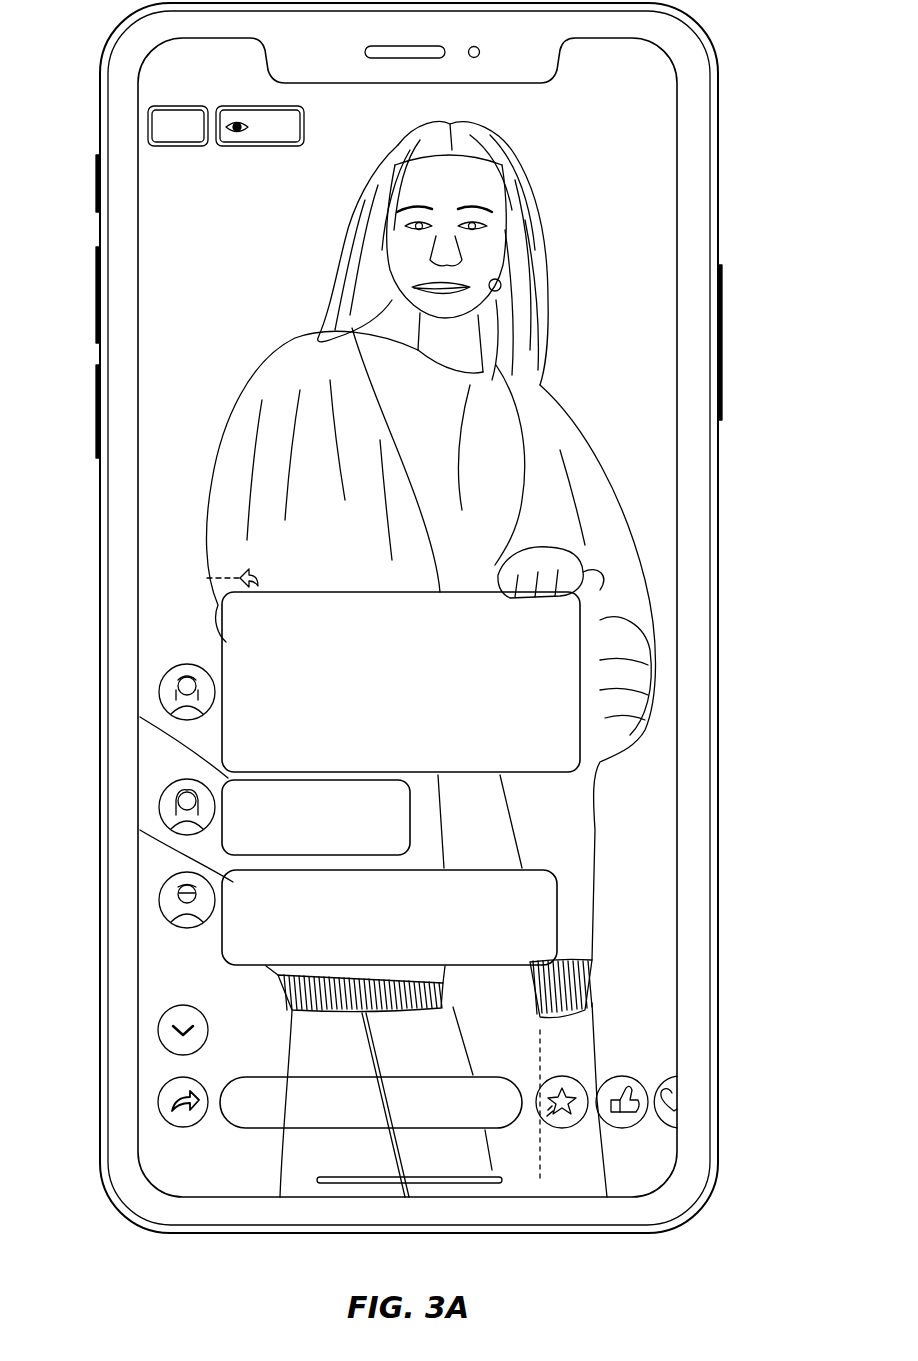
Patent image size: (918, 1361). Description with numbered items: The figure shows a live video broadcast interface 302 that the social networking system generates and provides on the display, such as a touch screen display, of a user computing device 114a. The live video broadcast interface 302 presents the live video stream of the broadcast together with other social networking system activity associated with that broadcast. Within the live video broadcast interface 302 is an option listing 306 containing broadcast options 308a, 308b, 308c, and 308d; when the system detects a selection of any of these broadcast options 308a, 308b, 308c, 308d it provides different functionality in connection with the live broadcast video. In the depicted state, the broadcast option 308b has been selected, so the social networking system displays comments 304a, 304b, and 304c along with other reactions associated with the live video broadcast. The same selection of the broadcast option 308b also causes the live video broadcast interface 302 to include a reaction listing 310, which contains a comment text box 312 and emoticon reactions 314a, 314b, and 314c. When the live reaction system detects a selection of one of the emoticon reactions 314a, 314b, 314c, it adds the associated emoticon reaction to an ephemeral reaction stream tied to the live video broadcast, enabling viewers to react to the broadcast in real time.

The user computing device 114a is at (693, 33).
The live video broadcast interface 302 is at (658, 141).
The comment 304a is at (568, 636).
The comment 304b is at (232, 783).
The comment 304c is at (233, 893).
The option listing 306 is at (339, 1038).
The broadcast option 308a is at (275, 1045).
The broadcast option 308b is at (394, 1046).
The broadcast option 308c is at (500, 1045).
The broadcast option 308d is at (610, 1047).
The reaction listing 310 is at (410, 1156).
The comment text box 312 is at (265, 1128).
The emoticon reaction 314a is at (555, 1128).
The emoticon reaction 314b is at (620, 1128).
The emoticon reaction 314c is at (674, 1092).